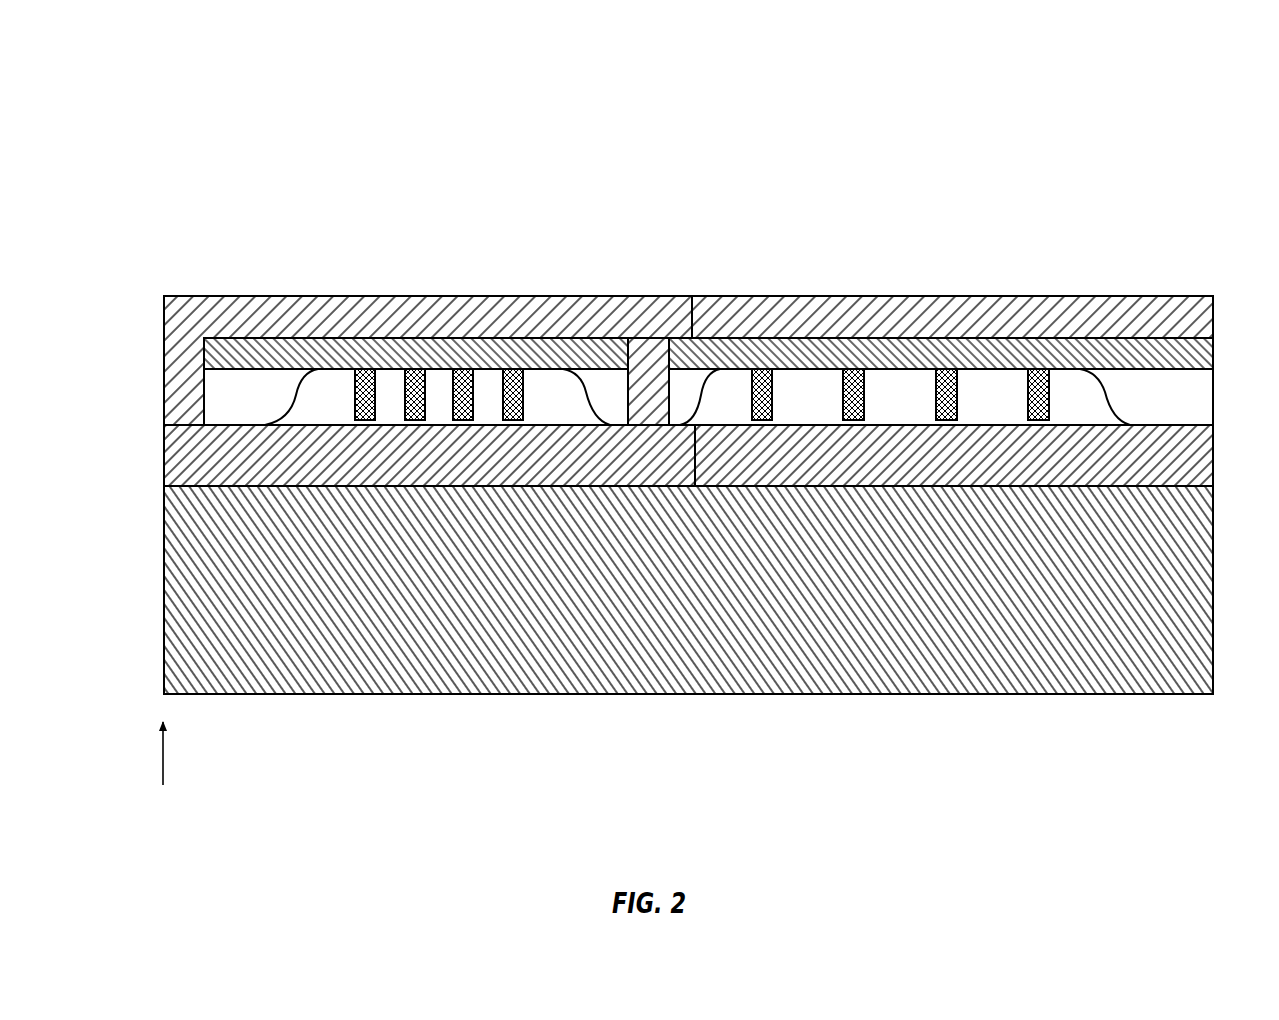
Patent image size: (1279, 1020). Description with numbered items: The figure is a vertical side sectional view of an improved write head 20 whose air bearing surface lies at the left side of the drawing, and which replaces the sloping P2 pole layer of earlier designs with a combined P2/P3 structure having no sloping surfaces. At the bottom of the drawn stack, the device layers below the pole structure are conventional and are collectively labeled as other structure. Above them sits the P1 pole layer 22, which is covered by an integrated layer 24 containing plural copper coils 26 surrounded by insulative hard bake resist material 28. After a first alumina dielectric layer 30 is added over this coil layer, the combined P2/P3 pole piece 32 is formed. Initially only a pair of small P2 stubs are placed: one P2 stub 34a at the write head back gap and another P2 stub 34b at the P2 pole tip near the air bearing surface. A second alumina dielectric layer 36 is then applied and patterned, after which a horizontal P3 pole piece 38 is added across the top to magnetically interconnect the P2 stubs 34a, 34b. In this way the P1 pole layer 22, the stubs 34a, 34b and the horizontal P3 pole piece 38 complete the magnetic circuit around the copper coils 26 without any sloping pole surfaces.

The write head 20 is at (204, 80).
The P1 pole layer 22 is at (170, 469).
The integrated layer 24 is at (388, 355).
The copper coils 26 is at (513, 369).
The insulative hard bake resist material 28 is at (543, 383).
The first alumina dielectric layer 30 is at (246, 380).
The combined P2/P3 pole piece 32 is at (158, 297).
The P2 stub 34a is at (652, 378).
The P2 stub 34b is at (204, 411).
The second alumina dielectric layer 36 is at (415, 348).
The horizontal P3 pole piece 38 is at (228, 306).